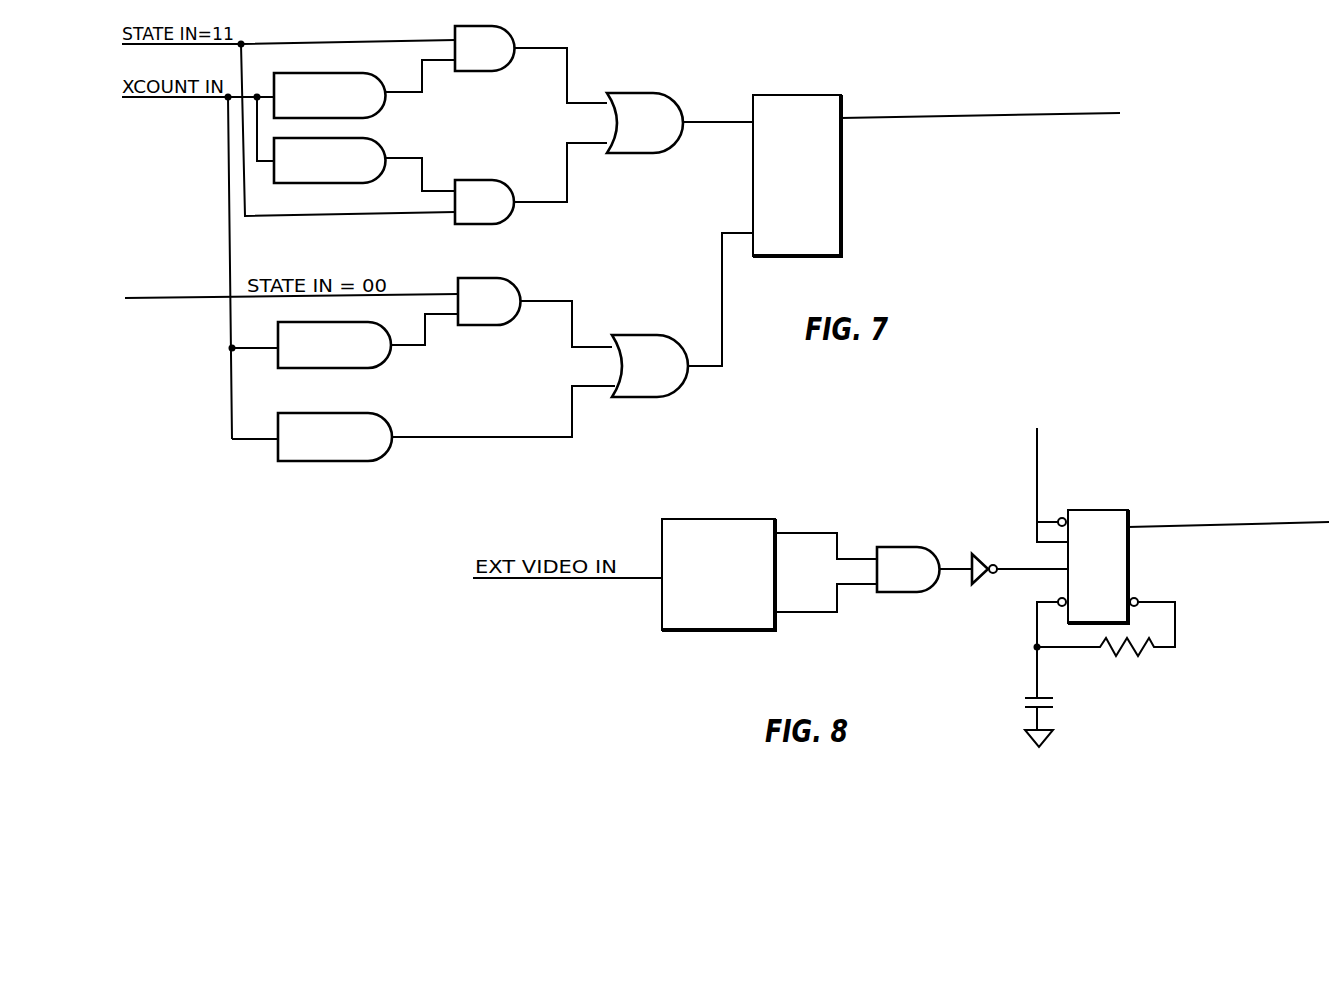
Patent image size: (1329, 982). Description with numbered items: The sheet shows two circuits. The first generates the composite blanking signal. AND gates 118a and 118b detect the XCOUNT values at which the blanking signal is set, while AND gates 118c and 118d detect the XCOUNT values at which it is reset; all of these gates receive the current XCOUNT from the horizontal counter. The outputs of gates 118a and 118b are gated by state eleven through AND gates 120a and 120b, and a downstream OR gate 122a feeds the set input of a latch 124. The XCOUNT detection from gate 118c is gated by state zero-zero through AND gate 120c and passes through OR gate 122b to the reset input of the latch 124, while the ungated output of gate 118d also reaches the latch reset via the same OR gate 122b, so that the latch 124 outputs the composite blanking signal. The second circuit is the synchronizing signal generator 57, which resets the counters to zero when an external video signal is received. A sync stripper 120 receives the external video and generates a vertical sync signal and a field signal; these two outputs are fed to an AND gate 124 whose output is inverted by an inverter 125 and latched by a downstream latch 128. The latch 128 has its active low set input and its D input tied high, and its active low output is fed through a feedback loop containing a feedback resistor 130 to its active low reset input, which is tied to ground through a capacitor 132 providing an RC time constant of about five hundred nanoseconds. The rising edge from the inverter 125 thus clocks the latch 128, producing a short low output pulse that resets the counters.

In FIG. 7, the AND gate 118a is at (360, 73).
In FIG. 7, the AND gate 118b is at (373, 138).
In FIG. 7, the AND gate 118c is at (367, 322).
In FIG. 7, the AND gate 118d is at (372, 413).
In FIG. 7, the AND gate 120a is at (500, 26).
In FIG. 7, the AND gate 120b is at (497, 180).
In FIG. 7, the AND gate 120c is at (508, 278).
In FIG. 7, the OR gate 122a is at (651, 93).
In FIG. 7, the OR gate 122b is at (655, 335).
In FIG. 7, the latch / AND gate 124 is at (798, 95).
In FIG. 8, the latch / AND gate 124 is at (903, 547).
In FIG. 8, the synchronizing signal generator 57 is at (1113, 403).
In FIG. 8, the sync stripper 120 is at (705, 519).
In FIG. 8, the inverter 125 is at (972, 554).
In FIG. 8, the latch 128 is at (1085, 510).
In FIG. 8, the feedback resistor 130 is at (1122, 658).
In FIG. 8, the capacitor 132 is at (1033, 697).